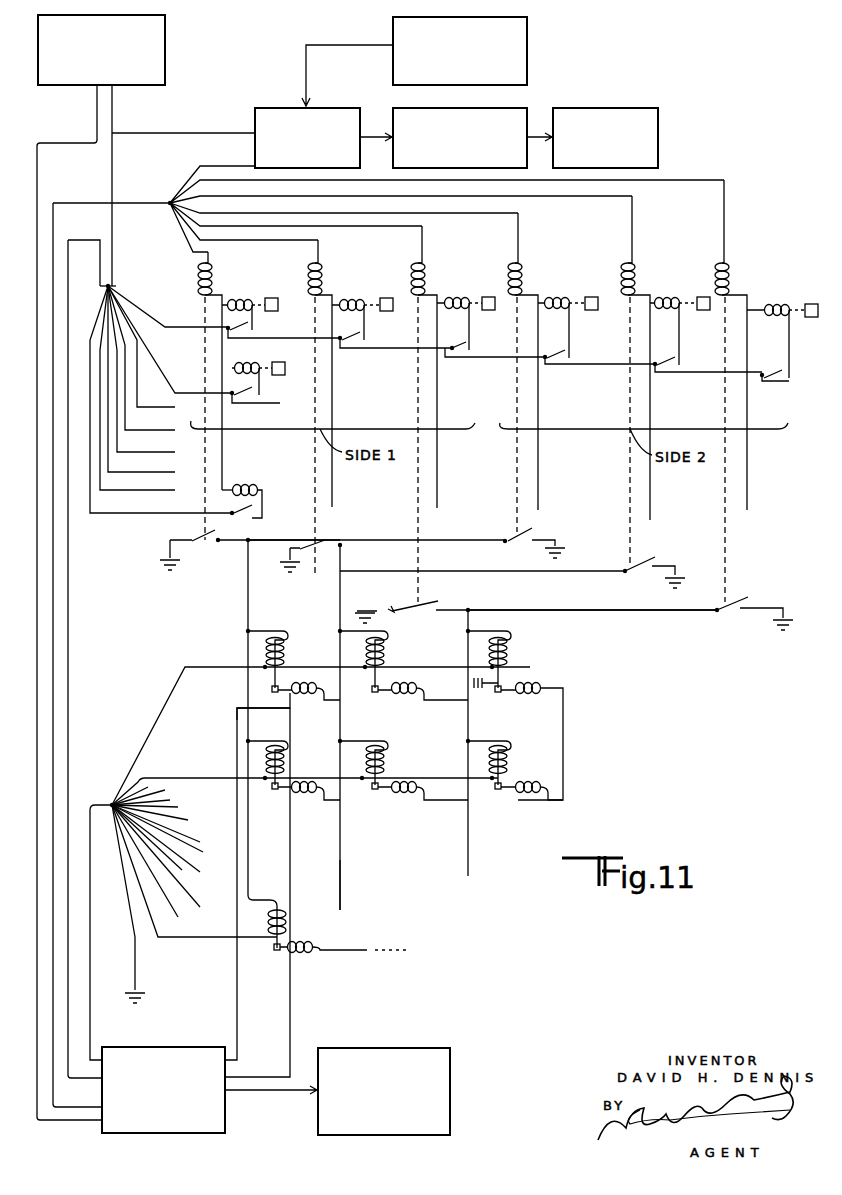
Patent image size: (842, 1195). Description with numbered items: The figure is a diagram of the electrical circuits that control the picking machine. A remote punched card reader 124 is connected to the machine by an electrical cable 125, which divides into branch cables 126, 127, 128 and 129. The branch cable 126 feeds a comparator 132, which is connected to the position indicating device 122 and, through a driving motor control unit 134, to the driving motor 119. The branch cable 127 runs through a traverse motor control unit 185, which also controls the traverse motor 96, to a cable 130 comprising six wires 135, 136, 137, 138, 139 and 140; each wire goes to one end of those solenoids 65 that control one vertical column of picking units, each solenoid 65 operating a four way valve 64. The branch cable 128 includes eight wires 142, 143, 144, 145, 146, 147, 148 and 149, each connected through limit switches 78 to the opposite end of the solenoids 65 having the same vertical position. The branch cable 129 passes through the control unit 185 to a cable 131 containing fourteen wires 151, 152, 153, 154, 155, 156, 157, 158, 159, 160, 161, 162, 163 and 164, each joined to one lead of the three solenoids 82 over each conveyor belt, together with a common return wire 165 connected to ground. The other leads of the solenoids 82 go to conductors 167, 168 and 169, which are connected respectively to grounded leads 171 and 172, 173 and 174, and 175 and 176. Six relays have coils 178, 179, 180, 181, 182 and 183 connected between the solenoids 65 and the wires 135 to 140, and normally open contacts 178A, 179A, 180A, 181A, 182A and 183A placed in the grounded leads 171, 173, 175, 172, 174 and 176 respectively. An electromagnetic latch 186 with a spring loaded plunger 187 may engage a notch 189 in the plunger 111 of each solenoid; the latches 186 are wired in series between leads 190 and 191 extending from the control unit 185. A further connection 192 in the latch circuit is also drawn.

The punched card reader 124 is at (84, 83).
The position indicating device 122 is at (443, 80).
The comparator 132 is at (291, 166).
The driving motor control unit 134 is at (443, 166).
The driving motor 119 is at (590, 166).
The traverse motor control unit 185 is at (146, 1131).
The traverse motor 96 is at (372, 1122).
The electrical cable 125 is at (113, 95).
The branch cable 126 is at (182, 133).
The branch cable 127 is at (73, 133).
The branch cable 128 is at (112, 270).
The branch cable 129 is at (72, 606).
The cable 130 is at (160, 195).
The cable 131 is at (90, 948).
The wire 135 is at (210, 252).
The wire 136 is at (318, 250).
The wire 137 is at (423, 246).
The wire 138 is at (518, 240).
The wire 139 is at (632, 245).
The wire 140 is at (724, 232).
The wire 142 is at (190, 318).
The wire 143 is at (188, 393).
The wire 144 is at (168, 410).
The wire 145 is at (164, 432).
The wire 146 is at (162, 454).
The wire 147 is at (162, 474).
The wire 148 is at (160, 492).
The wire 149 is at (162, 512).
The wire 151 is at (218, 668).
The wire 152 is at (140, 778).
The wire 153 is at (148, 787).
The wire 154 is at (165, 790).
The wire 155 is at (170, 800).
The wire 156 is at (178, 807).
The wire 157 is at (188, 820).
The wire 158 is at (200, 842).
The wire 159 is at (203, 852).
The wire 160 is at (200, 872).
The wire 161 is at (182, 870).
The wire 162 is at (200, 907).
The wire 163 is at (178, 917).
The wire 164 is at (259, 885).
The common return wire 165 is at (140, 975).
The conductor 167 is at (250, 850).
The conductor 168 is at (345, 858).
The conductor 169 is at (492, 860).
The grounded lead 171 is at (246, 546).
The grounded lead 172 is at (263, 541).
The grounded lead 173 is at (340, 560).
The grounded lead 174 is at (444, 571).
The grounded lead 175 is at (449, 726).
The grounded lead 176 is at (625, 615).
The relay coil 178 is at (212, 272).
The relay coil 179 is at (321, 272).
The relay coil 180 is at (425, 272).
The relay coil 181 is at (522, 272).
The relay coil 182 is at (635, 270).
The relay coil 183 is at (730, 278).
The normally open contacts 178A is at (194, 536).
The normally open contacts 179A is at (340, 551).
The normally open contacts 180A is at (444, 607).
The normally open contacts 181A is at (548, 537).
The normally open contacts 182A is at (666, 565).
The normally open contacts 183A is at (748, 598).
The four way valve 64 is at (272, 315).
The solenoid 65 is at (254, 295).
The limit switch 78 is at (240, 334).
The solenoid 82 is at (290, 640).
The electromagnetic latch 186 is at (578, 691).
The spring loaded plunger 187 is at (520, 687).
The notch 189 is at (504, 680).
The lead 190 is at (238, 1012).
The lead 191 is at (290, 1024).
The line 192 is at (236, 740).
The plunger 111 is at (485, 689).